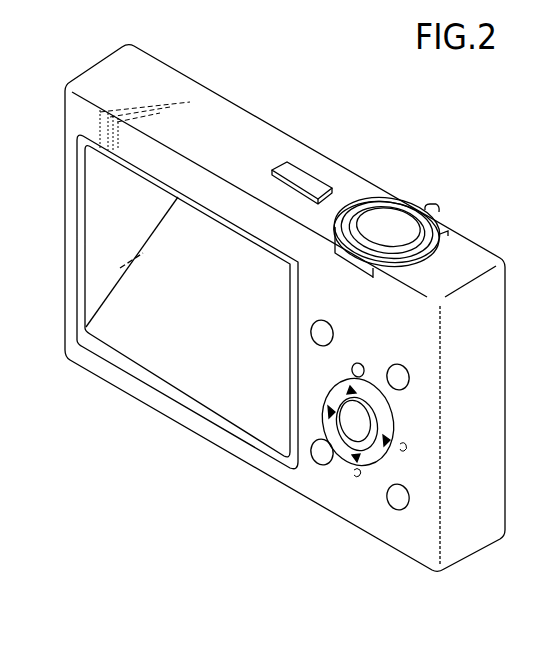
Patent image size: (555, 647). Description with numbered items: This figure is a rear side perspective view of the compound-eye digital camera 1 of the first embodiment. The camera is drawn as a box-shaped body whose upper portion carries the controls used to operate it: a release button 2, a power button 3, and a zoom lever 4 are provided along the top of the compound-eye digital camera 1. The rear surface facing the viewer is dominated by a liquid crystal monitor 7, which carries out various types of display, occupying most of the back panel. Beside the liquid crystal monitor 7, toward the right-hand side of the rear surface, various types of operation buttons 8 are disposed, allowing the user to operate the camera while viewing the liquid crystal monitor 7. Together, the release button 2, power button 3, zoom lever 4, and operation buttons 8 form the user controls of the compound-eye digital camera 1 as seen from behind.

The compound-eye digital camera 1 is at (220, 118).
The release button 2 is at (387, 218).
The power button 3 is at (303, 178).
The zoom lever 4 is at (432, 206).
The liquid crystal monitor 7 is at (115, 243).
The operation buttons 8 is at (313, 421).